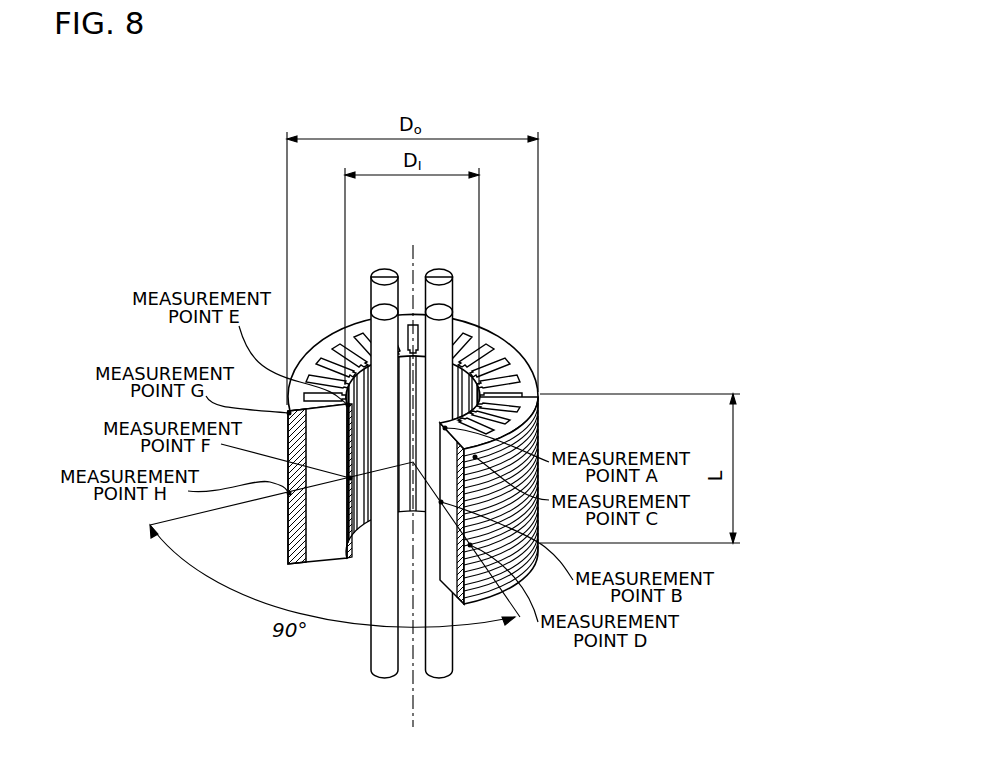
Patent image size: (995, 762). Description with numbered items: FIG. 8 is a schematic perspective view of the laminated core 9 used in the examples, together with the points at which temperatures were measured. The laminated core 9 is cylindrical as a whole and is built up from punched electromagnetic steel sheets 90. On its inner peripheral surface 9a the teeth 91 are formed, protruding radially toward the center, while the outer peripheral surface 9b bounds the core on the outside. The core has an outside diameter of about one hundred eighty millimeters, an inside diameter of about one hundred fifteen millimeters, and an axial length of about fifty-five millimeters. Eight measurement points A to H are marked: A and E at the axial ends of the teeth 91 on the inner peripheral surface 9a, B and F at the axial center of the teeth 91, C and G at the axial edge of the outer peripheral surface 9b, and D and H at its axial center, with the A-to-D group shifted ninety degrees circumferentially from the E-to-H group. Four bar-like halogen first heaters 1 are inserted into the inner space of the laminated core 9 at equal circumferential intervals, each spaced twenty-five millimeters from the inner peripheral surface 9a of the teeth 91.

The first heater 1 is at (385, 273).
The laminated core 9 is at (485, 406).
The inner peripheral surface of laminated core 9a is at (483, 385).
The outer peripheral surface of laminated core 9b is at (523, 345).
The punched electromagnetic steel sheet 90 is at (537, 440).
The tooth 91 is at (347, 404).